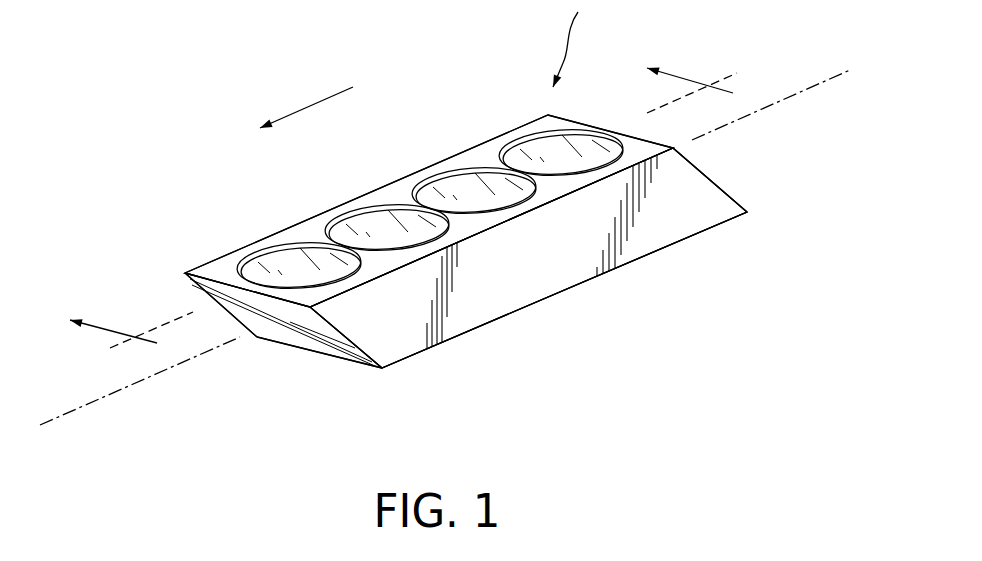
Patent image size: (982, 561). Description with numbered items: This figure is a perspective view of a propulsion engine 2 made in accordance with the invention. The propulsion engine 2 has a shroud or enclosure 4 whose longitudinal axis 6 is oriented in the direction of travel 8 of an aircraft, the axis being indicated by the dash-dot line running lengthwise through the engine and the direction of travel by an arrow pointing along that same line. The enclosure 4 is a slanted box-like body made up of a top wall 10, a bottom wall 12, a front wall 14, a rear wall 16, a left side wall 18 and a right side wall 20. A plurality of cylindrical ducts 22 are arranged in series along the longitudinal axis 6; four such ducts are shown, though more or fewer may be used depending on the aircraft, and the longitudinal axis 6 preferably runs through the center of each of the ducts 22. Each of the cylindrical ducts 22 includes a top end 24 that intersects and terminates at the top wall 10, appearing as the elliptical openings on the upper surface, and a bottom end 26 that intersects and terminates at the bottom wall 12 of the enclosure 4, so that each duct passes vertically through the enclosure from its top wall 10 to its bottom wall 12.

The propulsion engine 2 is at (415, 186).
The enclosure 4 is at (300, 348).
The longitudinal axis 6 is at (837, 73).
The direction of travel 8 is at (312, 100).
The top wall 10 is at (212, 258).
The bottom wall 12 is at (567, 291).
The front wall 14 is at (185, 275).
The rear wall 16 is at (723, 191).
The left side wall 18 is at (680, 222).
The right side wall 20 is at (455, 150).
The cylindrical ducts 22 is at (350, 205).
The top end 24 is at (385, 197).
The bottom end 26 is at (460, 340).